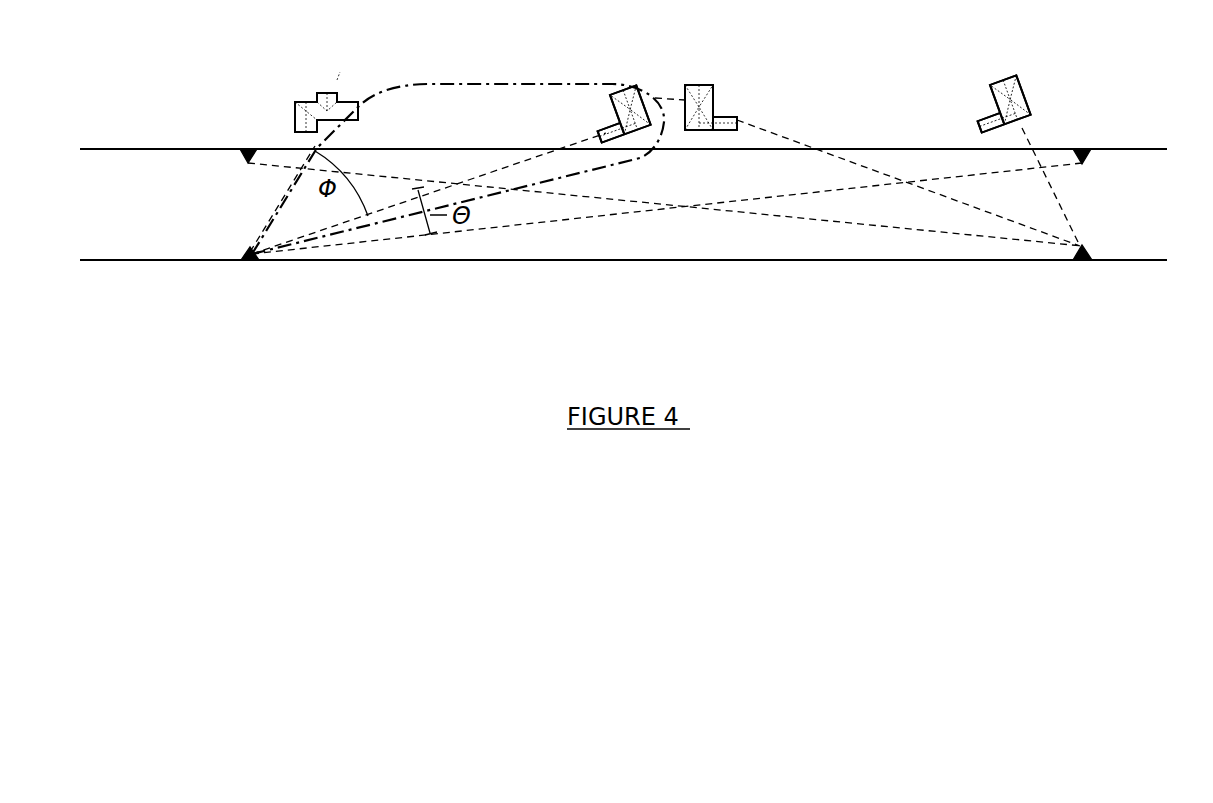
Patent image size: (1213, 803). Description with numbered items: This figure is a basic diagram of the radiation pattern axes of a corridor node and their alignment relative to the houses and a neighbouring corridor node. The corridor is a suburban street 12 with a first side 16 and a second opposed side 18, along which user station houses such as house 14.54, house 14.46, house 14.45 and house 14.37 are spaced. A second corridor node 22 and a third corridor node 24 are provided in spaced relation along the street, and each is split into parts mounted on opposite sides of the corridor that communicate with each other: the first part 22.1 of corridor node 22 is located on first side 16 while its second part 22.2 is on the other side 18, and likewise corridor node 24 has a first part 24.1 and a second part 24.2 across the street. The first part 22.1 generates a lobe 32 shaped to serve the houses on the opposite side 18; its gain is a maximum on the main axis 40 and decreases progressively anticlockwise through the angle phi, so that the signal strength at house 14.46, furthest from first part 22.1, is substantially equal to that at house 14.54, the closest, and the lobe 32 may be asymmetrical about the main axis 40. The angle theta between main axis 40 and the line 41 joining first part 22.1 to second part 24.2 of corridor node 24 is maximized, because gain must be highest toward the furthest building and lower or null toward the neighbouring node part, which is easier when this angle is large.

The second opposed side 18 is at (123, 127).
The suburban street 12 is at (123, 221).
The first side 16 is at (123, 307).
The second corridor node 22 is at (276, 292).
The first part of corridor node 22.1 is at (247, 251).
The second part of corridor node 22.2 is at (245, 148).
The third corridor node 24 is at (1112, 113).
The first part of corridor node 24.1 is at (1087, 262).
The second part of corridor node 24.2 is at (1087, 159).
The house 14.54 is at (312, 103).
The house 14.46 is at (627, 92).
The house 14.45 is at (700, 88).
The house 14.37 is at (1028, 98).
The second lobe 32 is at (450, 105).
The main axis 40 is at (560, 135).
The line 41 is at (610, 210).